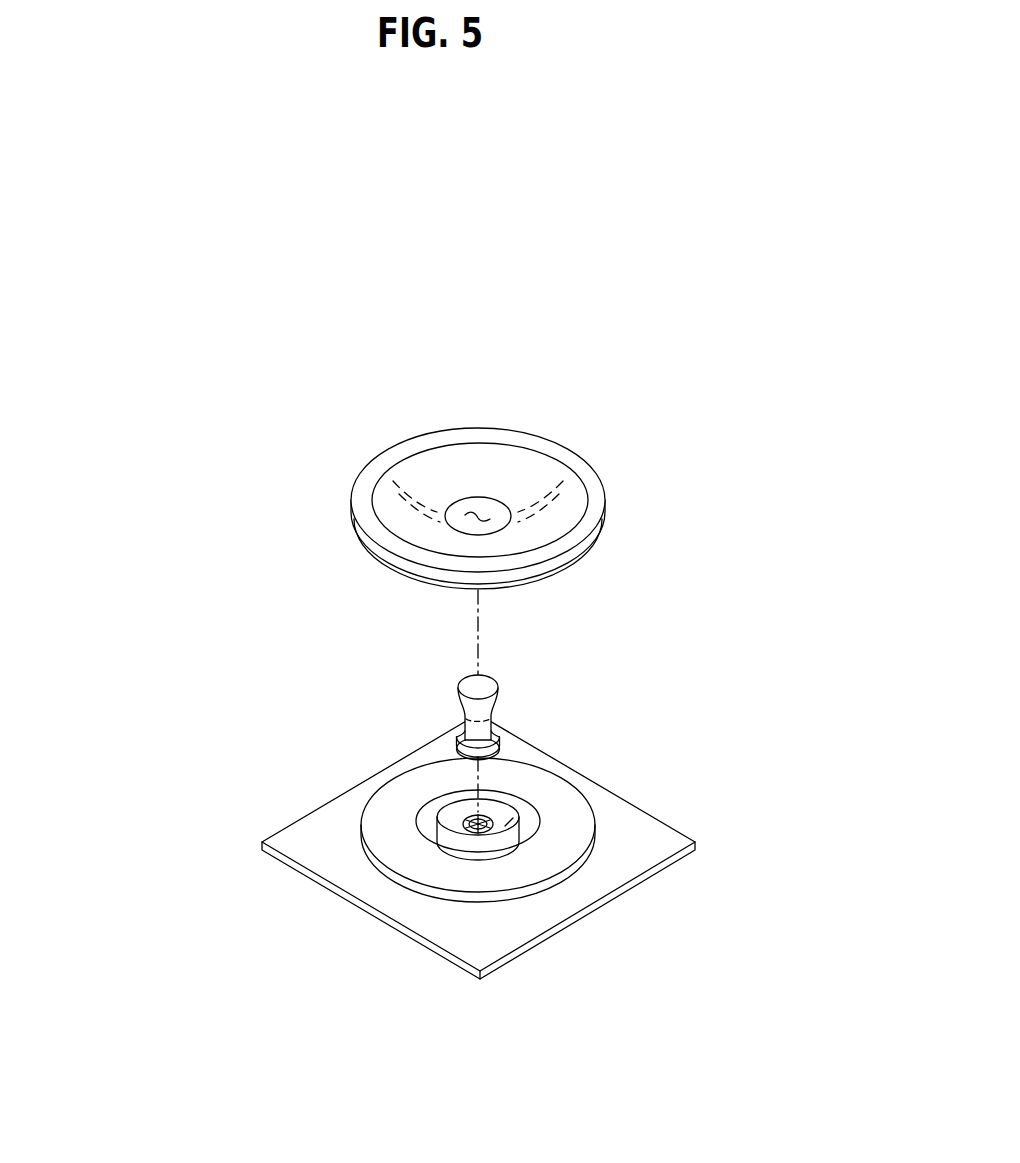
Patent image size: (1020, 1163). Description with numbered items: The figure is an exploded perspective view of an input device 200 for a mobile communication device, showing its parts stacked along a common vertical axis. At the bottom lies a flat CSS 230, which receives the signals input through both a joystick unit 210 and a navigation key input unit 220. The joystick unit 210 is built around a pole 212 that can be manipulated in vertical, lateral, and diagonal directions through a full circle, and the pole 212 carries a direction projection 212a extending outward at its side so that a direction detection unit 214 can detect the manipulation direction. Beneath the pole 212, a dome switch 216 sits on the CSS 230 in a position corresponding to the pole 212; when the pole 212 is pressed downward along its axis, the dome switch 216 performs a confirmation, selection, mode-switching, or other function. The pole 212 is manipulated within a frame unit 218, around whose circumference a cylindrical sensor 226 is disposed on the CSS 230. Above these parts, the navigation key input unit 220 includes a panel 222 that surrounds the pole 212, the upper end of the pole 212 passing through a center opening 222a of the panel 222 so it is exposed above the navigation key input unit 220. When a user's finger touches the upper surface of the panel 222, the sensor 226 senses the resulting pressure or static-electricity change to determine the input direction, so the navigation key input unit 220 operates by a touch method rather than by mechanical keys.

The input device 200 is at (823, 350).
The joystick unit 210 is at (638, 657).
The pole 212 is at (483, 701).
The direction projection 212a is at (458, 730).
The direction detection unit 214 is at (493, 814).
The dome switch 216 is at (485, 817).
The frame unit 218 is at (508, 824).
The navigation key input unit 220 is at (125, 643).
The panel 222 is at (365, 493).
The center hole of panel 222a is at (478, 513).
The sensor 226 is at (444, 779).
The CSS 230 is at (635, 858).